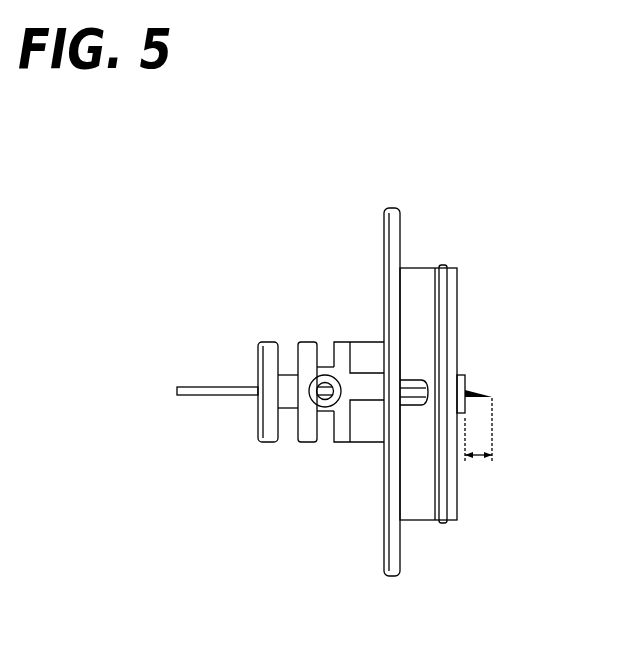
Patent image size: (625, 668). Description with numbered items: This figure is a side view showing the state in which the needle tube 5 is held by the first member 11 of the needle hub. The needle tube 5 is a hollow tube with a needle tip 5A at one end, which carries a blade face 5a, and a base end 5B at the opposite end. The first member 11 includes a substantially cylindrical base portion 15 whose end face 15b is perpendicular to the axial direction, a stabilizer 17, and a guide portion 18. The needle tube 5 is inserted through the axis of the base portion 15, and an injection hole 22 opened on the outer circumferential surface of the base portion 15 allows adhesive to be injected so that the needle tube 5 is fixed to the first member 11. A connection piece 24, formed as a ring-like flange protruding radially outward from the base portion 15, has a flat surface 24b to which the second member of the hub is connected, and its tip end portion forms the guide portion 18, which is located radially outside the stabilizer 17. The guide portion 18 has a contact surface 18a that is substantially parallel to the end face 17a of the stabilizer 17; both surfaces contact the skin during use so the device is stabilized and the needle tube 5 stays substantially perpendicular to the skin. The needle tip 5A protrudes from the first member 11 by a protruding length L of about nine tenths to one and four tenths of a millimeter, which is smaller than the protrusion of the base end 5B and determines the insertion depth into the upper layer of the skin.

The needle tube 5 is at (202, 386).
The blade face 5a is at (470, 388).
The needle tip 5A is at (514, 395).
The base end 5B is at (172, 405).
The first member 11 is at (502, 236).
The base portion 15 is at (347, 350).
The end face 15b is at (257, 423).
The stabilizer 17 is at (418, 513).
The end face 17a is at (457, 507).
The guide portion 18 is at (393, 213).
The contact surface 18a is at (400, 233).
The injection hole 22 is at (326, 412).
The connection piece 24 is at (390, 490).
The flat surface 24b is at (383, 258).
The protruding length L is at (478, 443).